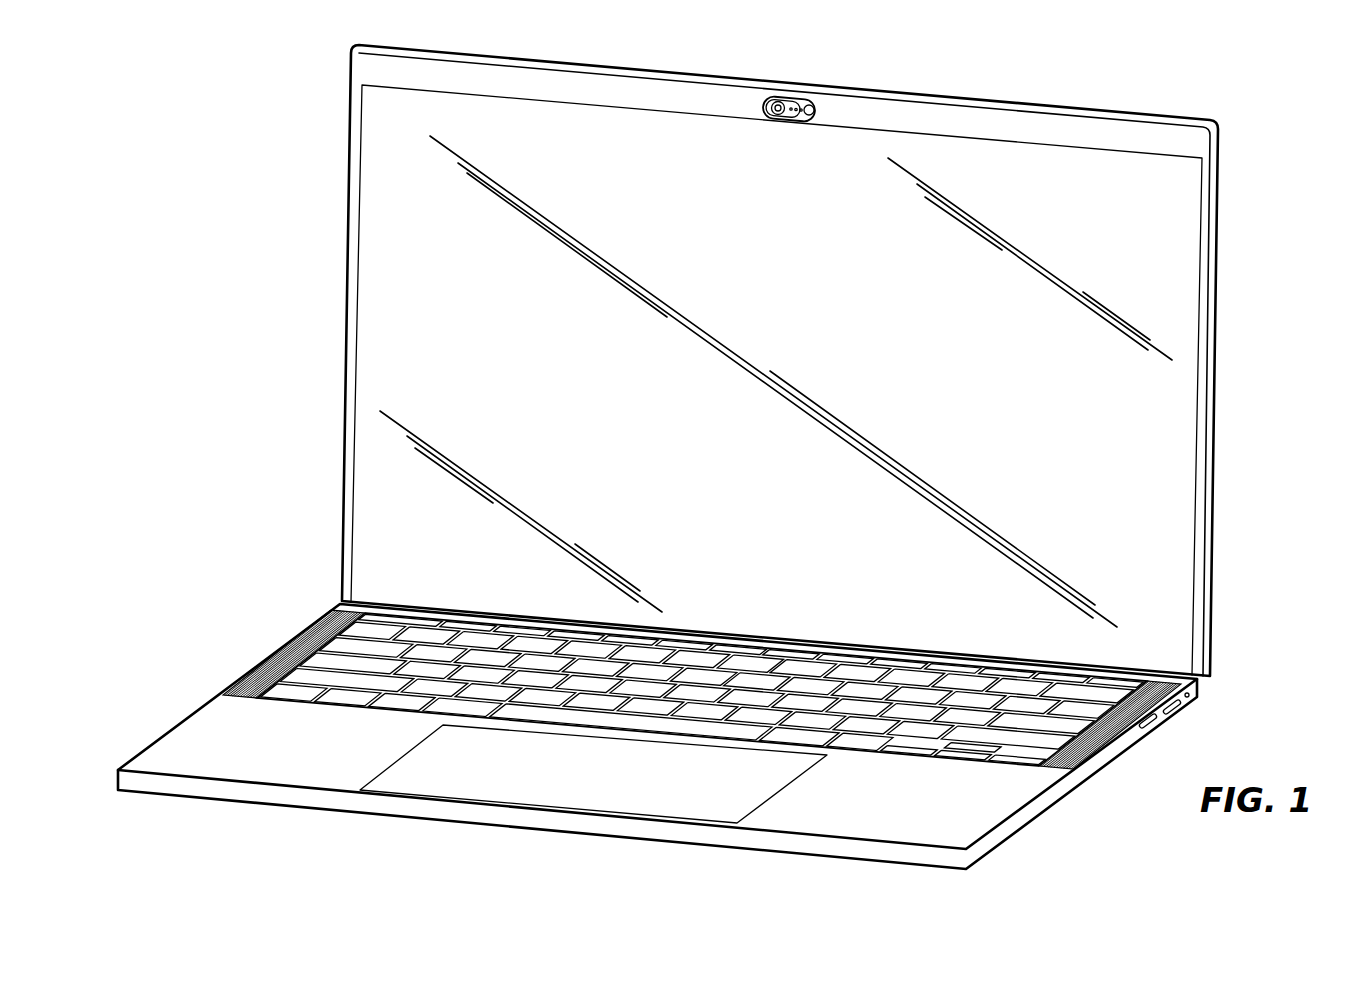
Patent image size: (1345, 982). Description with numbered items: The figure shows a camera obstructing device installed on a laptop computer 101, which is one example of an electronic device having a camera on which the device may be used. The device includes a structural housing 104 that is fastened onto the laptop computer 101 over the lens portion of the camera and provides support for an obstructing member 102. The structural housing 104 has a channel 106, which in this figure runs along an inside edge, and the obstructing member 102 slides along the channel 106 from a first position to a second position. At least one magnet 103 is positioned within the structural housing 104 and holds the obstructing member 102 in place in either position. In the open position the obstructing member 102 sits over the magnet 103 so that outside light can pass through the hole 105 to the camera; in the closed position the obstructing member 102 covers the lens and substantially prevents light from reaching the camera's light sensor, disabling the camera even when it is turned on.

The laptop computer 101 is at (1125, 243).
The obstructing member 102 is at (765, 103).
The magnet 103 is at (768, 113).
The structural housing 104 is at (793, 100).
The hole 105 is at (818, 85).
The channel 106 is at (787, 115).